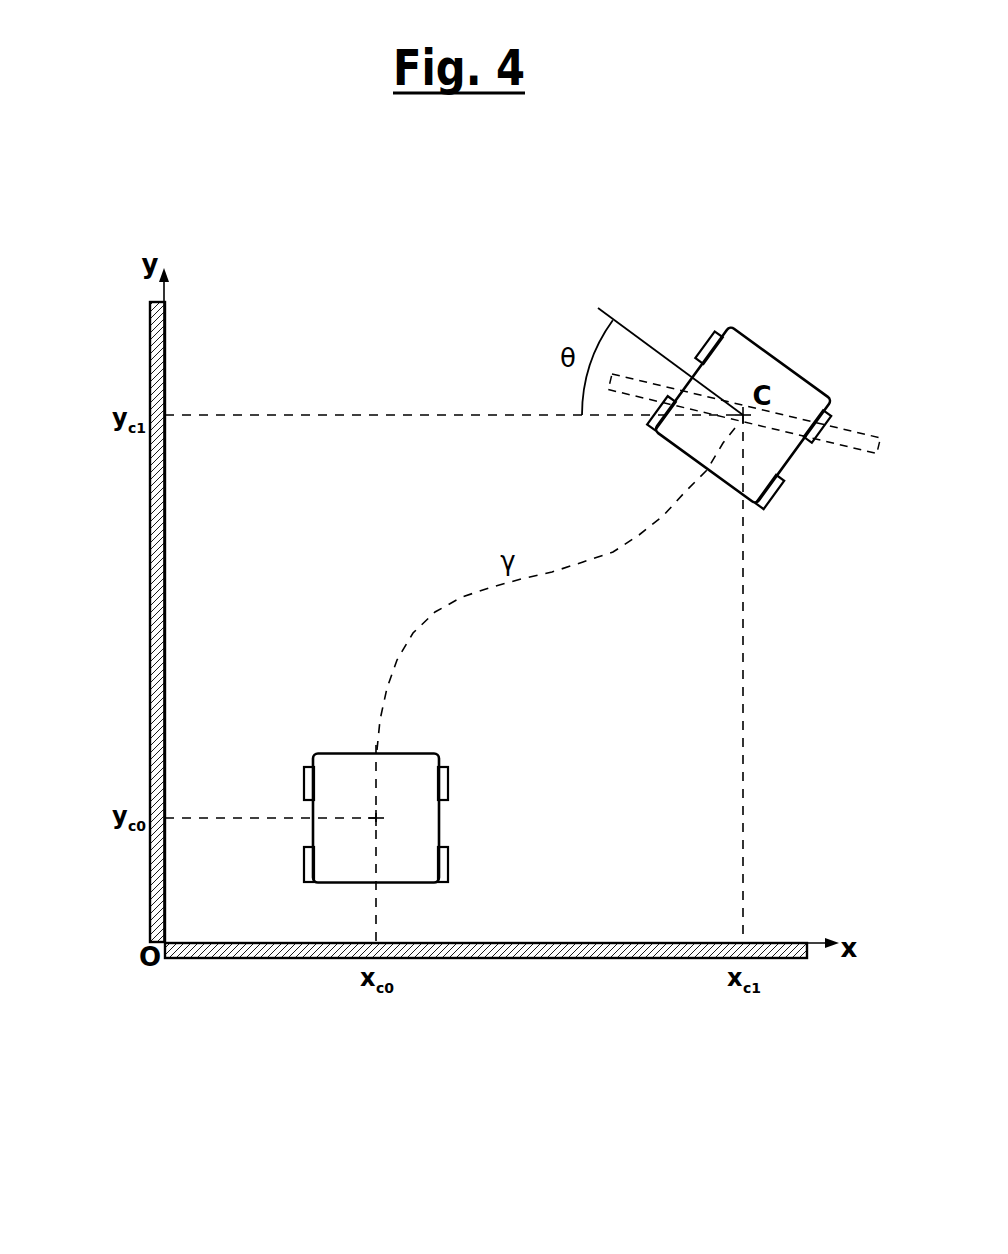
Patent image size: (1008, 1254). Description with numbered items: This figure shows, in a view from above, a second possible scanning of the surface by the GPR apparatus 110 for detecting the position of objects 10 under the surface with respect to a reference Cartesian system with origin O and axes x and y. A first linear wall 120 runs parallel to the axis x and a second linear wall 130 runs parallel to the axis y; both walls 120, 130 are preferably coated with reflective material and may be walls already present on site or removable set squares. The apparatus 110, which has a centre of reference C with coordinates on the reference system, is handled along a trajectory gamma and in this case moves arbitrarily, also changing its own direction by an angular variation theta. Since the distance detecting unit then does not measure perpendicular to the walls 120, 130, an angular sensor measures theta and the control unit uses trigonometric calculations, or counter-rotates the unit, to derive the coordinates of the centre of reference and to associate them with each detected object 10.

The objects 10 is at (860, 432).
The GPR apparatus 110 is at (304, 700).
The first linear wall 120 is at (485, 958).
The second linear wall 130 is at (148, 605).